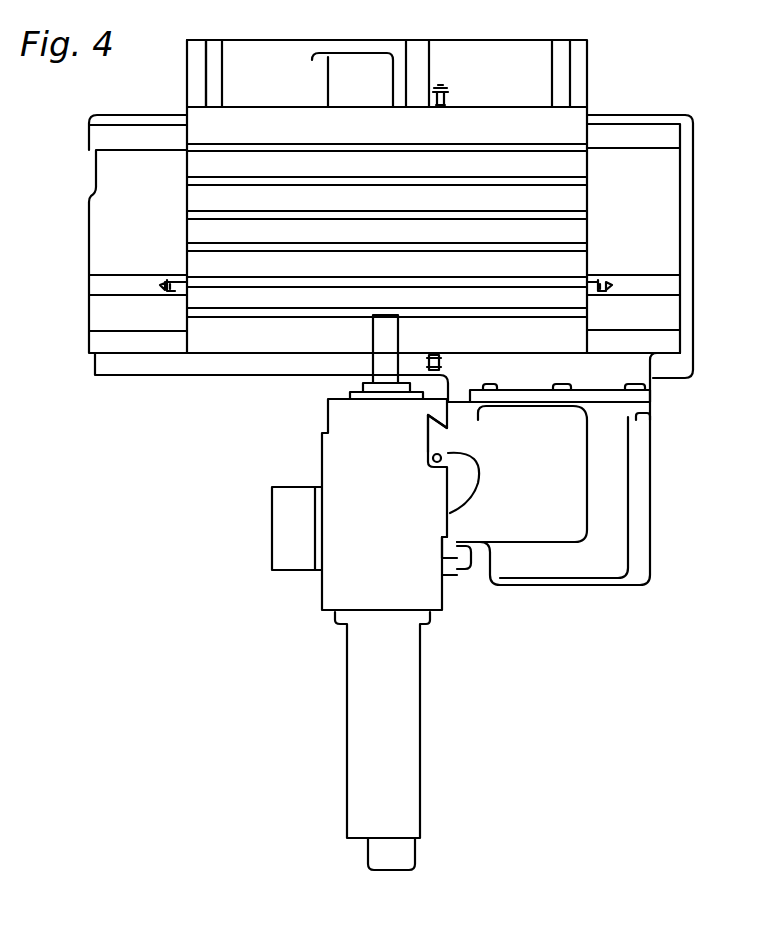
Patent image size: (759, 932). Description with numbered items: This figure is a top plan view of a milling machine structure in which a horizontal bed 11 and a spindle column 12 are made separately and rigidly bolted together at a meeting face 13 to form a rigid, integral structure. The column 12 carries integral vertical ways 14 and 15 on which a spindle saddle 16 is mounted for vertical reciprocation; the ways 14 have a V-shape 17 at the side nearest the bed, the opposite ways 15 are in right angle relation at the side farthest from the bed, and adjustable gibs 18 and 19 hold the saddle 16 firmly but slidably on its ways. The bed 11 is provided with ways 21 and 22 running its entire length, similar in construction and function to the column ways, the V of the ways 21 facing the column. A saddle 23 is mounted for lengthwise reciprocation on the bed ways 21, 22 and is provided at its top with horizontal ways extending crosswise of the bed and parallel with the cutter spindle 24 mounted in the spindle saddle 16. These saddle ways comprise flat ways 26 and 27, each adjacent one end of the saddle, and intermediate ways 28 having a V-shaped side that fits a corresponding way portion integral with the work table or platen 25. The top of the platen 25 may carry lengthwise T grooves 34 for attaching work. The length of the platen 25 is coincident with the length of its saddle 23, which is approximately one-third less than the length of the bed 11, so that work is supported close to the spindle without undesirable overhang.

The bed 11 is at (647, 115).
The column 12 is at (549, 495).
The meeting face 13 is at (633, 400).
The vertical ways 14 is at (428, 437).
The vertical ways 15 is at (442, 545).
The spindle saddle 16 is at (335, 415).
The V-shape 17 is at (437, 415).
The adjustable gib 18 is at (429, 462).
The adjustable gib 19 is at (457, 570).
The bed way 21 is at (665, 317).
The bed way 22 is at (663, 137).
The saddle 23 is at (588, 57).
The cutter spindle 24 is at (373, 338).
The work table or platen 25 is at (562, 127).
The flat way 26 is at (194, 46).
The flat way 27 is at (555, 48).
The intermediate ways 28 is at (402, 47).
The T grooves 34 is at (468, 143).